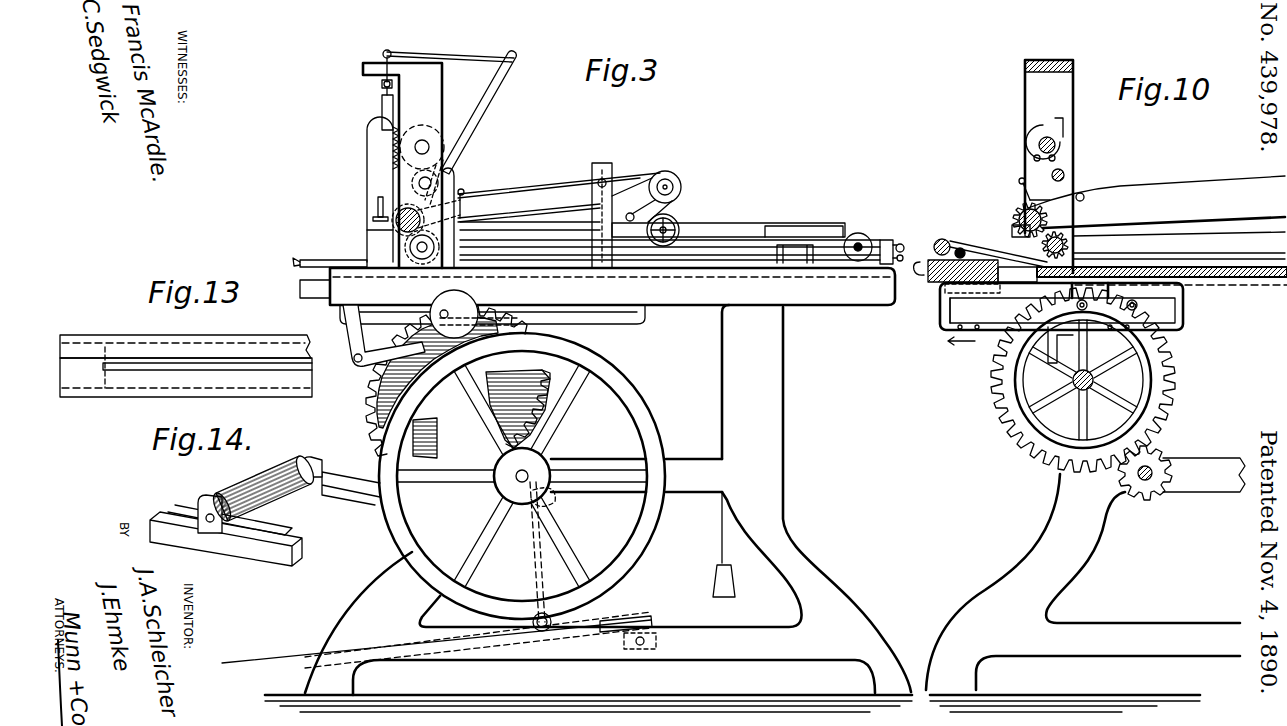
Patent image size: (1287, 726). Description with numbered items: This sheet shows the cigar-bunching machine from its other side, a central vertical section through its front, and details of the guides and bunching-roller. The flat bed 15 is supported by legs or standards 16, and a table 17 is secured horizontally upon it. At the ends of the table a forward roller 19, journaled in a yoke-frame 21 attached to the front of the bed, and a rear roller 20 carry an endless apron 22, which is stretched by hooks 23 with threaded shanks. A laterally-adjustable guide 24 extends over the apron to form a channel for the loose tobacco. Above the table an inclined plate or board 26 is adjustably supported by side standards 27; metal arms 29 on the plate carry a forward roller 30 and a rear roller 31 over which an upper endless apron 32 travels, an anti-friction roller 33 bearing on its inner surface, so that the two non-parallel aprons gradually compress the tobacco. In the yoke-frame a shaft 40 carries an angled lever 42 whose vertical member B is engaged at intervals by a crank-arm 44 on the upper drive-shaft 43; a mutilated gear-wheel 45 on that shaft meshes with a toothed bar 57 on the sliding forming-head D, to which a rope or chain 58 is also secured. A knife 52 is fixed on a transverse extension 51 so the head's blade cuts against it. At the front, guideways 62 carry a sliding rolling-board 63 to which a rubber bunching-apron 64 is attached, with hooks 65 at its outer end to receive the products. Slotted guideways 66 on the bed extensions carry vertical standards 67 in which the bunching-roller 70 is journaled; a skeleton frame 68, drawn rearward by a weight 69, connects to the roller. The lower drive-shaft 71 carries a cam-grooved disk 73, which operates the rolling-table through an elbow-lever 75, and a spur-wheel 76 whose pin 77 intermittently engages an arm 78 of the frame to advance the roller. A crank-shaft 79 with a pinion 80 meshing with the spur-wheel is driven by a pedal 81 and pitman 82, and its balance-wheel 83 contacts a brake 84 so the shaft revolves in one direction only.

In FIG. 3, the bed 15 is at (704, 292).
In FIG. 10, the bed 15 is at (1210, 283).
In FIG. 3, the legs or standards 16 is at (588, 508).
In FIG. 10, the legs or standards 16 is at (1083, 593).
In FIG. 3, the table 17 is at (716, 240).
In FIG. 10, the roller 19 is at (1068, 245).
In FIG. 3, the roller 20 is at (884, 242).
In FIG. 3, the yoke-frame 21 is at (402, 165).
In FIG. 10, the yoke-frame 21 is at (1049, 166).
In FIG. 3, the endless apron 22 is at (861, 238).
In FIG. 10, the endless apron 22 is at (1210, 230).
In FIG. 3, the hooks 23 is at (900, 243).
In FIG. 3, the laterally-adjustable guide 24 is at (806, 227).
In FIG. 3, the plate or board 26 is at (636, 232).
In FIG. 3, the side standards 27 is at (612, 168).
In FIG. 3, the metal arms 29 is at (552, 212).
In FIG. 10, the roller 30 is at (1041, 220).
In FIG. 3, the roller 31 is at (676, 183).
In FIG. 3, the endless apron 32 is at (530, 190).
In FIG. 10, the endless apron 32 is at (1197, 184).
In FIG. 3, the anti-friction roller 33 is at (465, 191).
In FIG. 10, the anti-friction roller 33 is at (1097, 187).
In FIG. 10, the shaft 40 is at (1040, 183).
In FIG. 10, the angled lever 42 is at (1066, 175).
In FIG. 3, the upper drive-shaft 43 is at (429, 147).
In FIG. 10, the upper drive-shaft 43 is at (1056, 143).
In FIG. 10, the crank-arm 44 is at (1046, 125).
In FIG. 3, the mutilated gear-wheel 45 is at (448, 128).
In FIG. 10, the transverse projection or extension 51 is at (1017, 275).
In FIG. 10, the knife 52 is at (1014, 230).
In FIG. 3, the toothed bar 57 is at (382, 101).
In FIG. 3, the rope or chain 58 is at (448, 57).
In FIG. 10, the longitudinal guideways 62 is at (1061, 314).
In FIG. 3, the rolling-board 63 is at (310, 289).
In FIG. 10, the rolling-board 63 is at (945, 289).
In FIG. 3, the bunching-apron 64 is at (368, 270).
In FIG. 10, the bunching-apron 64 is at (985, 256).
In FIG. 3, the hooks 65 is at (292, 260).
In FIG. 10, the hooks 65 is at (921, 278).
In FIG. 3, the slotted guideway 66 is at (340, 260).
In FIG. 13, the slotted guideway 66 is at (186, 356).
In FIG. 14, the slotted guideway 66 is at (240, 556).
In FIG. 10, the slotted guideway 66 is at (1160, 257).
In FIG. 13, the vertical standard 67 is at (312, 368).
In FIG. 14, the vertical standard 67 is at (200, 508).
In FIG. 10, the vertical standard 67 is at (985, 242).
In FIG. 3, the skeleton frame 68 is at (640, 325).
In FIG. 10, the skeleton frame 68 is at (967, 310).
In FIG. 3, the weight 69 is at (714, 544).
In FIG. 14, the bunching-roller 70 is at (250, 483).
In FIG. 10, the bunching-roller 70 is at (946, 240).
In FIG. 10, the lower drive-shaft 71 is at (1094, 378).
In FIG. 3, the disk or solid wheel 73 is at (463, 387).
In FIG. 3, the elbow-lever 75 is at (343, 312).
In FIG. 3, the spur-wheel 76 is at (370, 410).
In FIG. 10, the spur-wheel 76 is at (1095, 380).
In FIG. 10, the pin 77 is at (1083, 380).
In FIG. 3, the arm 78 is at (795, 255).
In FIG. 10, the arm 78 is at (1047, 359).
In FIG. 3, the crank-shaft 79 is at (530, 480).
In FIG. 10, the crank-shaft 79 is at (1160, 453).
In FIG. 10, the pinion 80 is at (1145, 475).
In FIG. 3, the pedal 81 is at (439, 634).
In FIG. 3, the pitman 82 is at (535, 556).
In FIG. 3, the balance-wheel 83 is at (522, 476).
In FIG. 3, the brake 84 is at (475, 314).
In FIG. 10, the vertical member B is at (1060, 158).
In FIG. 3, the forming-head D is at (375, 180).